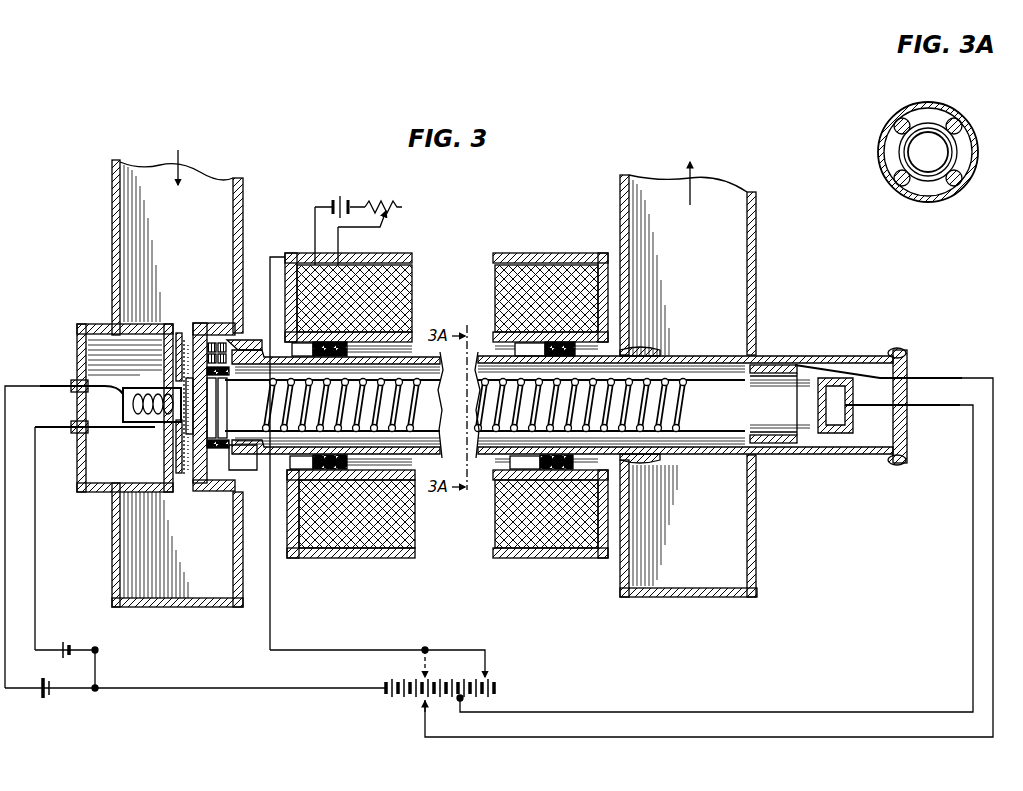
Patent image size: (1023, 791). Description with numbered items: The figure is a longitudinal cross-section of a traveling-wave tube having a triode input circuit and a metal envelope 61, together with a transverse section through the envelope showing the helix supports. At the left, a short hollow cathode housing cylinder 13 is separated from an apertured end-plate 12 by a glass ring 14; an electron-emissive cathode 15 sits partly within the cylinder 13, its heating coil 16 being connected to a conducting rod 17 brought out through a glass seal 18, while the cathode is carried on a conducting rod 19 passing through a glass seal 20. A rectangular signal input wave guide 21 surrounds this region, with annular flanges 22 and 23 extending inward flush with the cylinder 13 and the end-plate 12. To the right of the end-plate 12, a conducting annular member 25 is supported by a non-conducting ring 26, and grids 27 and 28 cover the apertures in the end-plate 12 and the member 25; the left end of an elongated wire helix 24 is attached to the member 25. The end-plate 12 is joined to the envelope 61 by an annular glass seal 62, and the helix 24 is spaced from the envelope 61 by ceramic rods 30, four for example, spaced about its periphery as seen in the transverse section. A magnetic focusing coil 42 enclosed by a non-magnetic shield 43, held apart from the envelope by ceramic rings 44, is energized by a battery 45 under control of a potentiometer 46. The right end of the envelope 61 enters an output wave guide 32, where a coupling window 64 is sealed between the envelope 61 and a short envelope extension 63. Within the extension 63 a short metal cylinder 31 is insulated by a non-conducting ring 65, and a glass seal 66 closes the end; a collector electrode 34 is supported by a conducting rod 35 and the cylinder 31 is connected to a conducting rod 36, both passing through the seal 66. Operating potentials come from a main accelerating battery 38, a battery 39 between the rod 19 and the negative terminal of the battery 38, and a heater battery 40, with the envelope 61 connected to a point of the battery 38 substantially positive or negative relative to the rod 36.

In FIG. 3, the end-plate 12 is at (190, 334).
In FIG. 3, the cathode housing cylinder 13 is at (102, 326).
In FIG. 3, the glass ring 14 is at (183, 332).
In FIG. 3, the cathode 15 is at (140, 392).
In FIG. 3, the heating coil 16 is at (127, 408).
In FIG. 3, the conducting rod 17 is at (55, 383).
In FIG. 3, the glass seal 18 is at (73, 392).
In FIG. 3, the conducting rod 19 is at (50, 433).
In FIG. 3, the glass seal 20 is at (88, 432).
In FIG. 3, the signal input wave guide 21 is at (112, 236).
In FIG. 3, the annular flange 22 is at (160, 492).
In FIG. 3, the annular flange 23 is at (205, 490).
In FIG. 3, the wire helix 24 is at (688, 412).
In FIG. 3A, the wire helix 24 is at (900, 148).
In FIG. 3, the conducting annular member 25 is at (243, 457).
In FIG. 3, the non-conducting ring 26 is at (244, 346).
In FIG. 3, the grid 27 is at (185, 440).
In FIG. 3, the grid 28 is at (190, 450).
In FIG. 3, the ceramic rods 30 is at (716, 386).
In FIG. 3A, the ceramic rods 30 is at (904, 116).
In FIG. 3, the metal cylinder 31 is at (797, 400).
In FIG. 3, the output wave guide 32 is at (757, 270).
In FIG. 3, the collector electrode 34 is at (855, 416).
In FIG. 3, the conducting rod 35 is at (935, 407).
In FIG. 3, the conducting rod 36 is at (950, 377).
In FIG. 3, the main electron beam accelerating battery 38 is at (410, 702).
In FIG. 3, the battery 39 is at (68, 640).
In FIG. 3, the battery 40 is at (46, 700).
In FIG. 3, the magnetic focusing coil 42 is at (408, 280).
In FIG. 3, the non-magnetic shield 43 is at (372, 254).
In FIG. 3, the ceramic rings 44 is at (348, 354).
In FIG. 3, the battery 45 is at (340, 196).
In FIG. 3, the potentiometer 46 is at (381, 204).
In FIG. 3, the metal envelope 61 is at (279, 352).
In FIG. 3A, the metal envelope 61 is at (958, 108).
In FIG. 3, the annular glass seal 62 is at (230, 342).
In FIG. 3, the envelope extension 63 is at (682, 355).
In FIG. 3, the coupling window 64 is at (788, 356).
In FIG. 3, the non-conducting ring 65 is at (800, 455).
In FIG. 3, the glass seal 66 is at (908, 356).